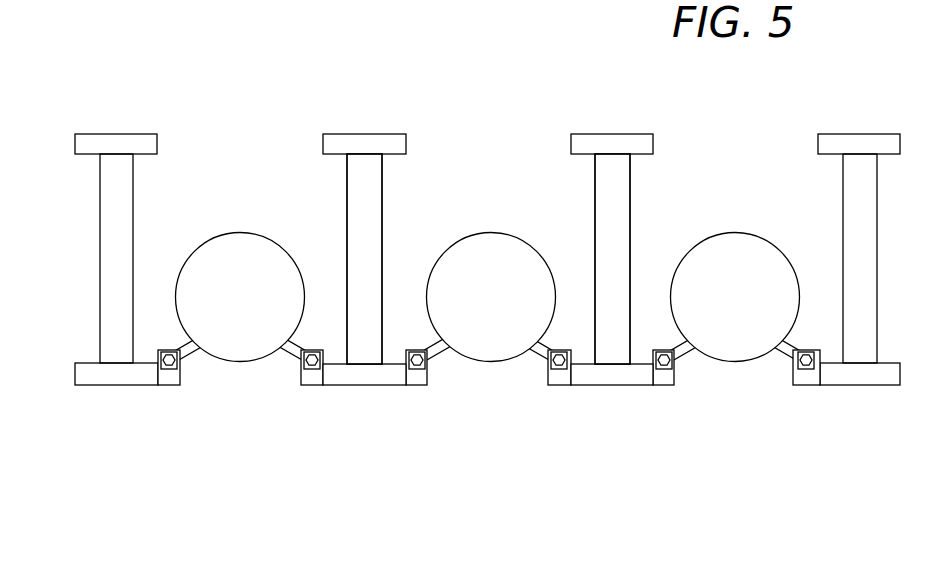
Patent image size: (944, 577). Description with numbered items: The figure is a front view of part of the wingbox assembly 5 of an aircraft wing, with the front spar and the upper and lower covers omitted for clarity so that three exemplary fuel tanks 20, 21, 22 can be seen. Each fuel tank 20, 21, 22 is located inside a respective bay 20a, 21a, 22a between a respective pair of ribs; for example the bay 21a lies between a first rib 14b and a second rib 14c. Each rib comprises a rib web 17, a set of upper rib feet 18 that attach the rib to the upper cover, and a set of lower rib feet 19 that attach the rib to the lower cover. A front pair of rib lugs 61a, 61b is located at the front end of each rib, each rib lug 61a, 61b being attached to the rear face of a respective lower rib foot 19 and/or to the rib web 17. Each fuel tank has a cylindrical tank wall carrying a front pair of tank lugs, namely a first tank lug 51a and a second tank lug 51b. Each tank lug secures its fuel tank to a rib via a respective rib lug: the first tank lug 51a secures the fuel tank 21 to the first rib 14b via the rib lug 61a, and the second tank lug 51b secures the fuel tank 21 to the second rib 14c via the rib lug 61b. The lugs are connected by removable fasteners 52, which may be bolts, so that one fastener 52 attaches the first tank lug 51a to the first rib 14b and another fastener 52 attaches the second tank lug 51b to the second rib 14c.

The wingbox assembly 5 is at (288, 423).
The first rib 14b is at (372, 127).
The second rib 14c is at (585, 127).
The rib web 17 is at (346, 210).
The upper rib feet 18 is at (115, 141).
The lower rib feet 19 is at (345, 375).
The fuel tank 20 is at (233, 267).
The bay 20a is at (295, 181).
The fuel tank 21 is at (477, 233).
The bay 21a is at (557, 187).
The fuel tank 22 is at (740, 272).
The bay 22a is at (743, 184).
The first tank lug 51a is at (444, 352).
The second tank lug 51b is at (537, 357).
The removable fastener 52 is at (171, 362).
The rib lug 61a is at (417, 377).
The rib lug 61b is at (558, 372).